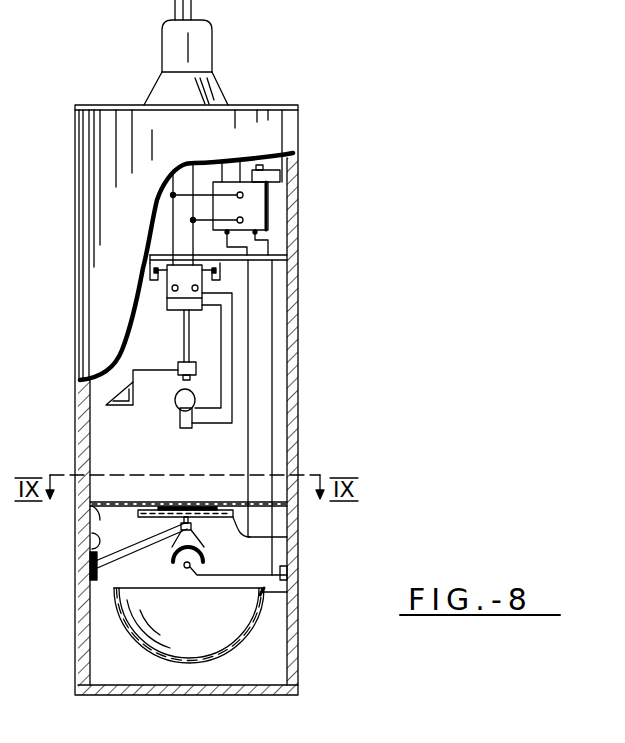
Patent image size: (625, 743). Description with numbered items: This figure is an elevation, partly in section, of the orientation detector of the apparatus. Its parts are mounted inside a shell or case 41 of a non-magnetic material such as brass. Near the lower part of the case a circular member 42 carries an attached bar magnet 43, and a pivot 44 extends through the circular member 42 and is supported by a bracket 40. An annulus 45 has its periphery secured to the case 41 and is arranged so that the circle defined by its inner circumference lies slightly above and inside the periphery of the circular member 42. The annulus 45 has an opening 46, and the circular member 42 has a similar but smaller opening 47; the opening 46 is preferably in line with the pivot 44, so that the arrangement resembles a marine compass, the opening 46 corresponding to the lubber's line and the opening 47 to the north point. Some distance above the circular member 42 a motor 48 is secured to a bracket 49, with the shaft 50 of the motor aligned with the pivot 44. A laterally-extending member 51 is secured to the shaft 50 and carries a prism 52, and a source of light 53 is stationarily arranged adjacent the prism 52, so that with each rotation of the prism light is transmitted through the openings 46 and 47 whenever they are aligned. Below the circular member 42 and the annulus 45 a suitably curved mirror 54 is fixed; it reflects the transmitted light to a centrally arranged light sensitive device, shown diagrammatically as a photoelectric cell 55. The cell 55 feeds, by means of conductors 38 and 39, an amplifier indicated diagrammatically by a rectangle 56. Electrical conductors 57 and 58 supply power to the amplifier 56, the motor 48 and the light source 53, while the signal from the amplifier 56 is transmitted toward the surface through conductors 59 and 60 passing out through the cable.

The conductor 38 is at (255, 274).
The conductor 39 is at (272, 297).
The bracket 40 is at (90, 556).
The shell or case 41 is at (78, 146).
The circular member 42 is at (252, 537).
The bar magnet 43 is at (208, 510).
The pivot 44 is at (205, 552).
The annulus 45 is at (90, 508).
The opening 46 is at (136, 507).
The opening 47 is at (150, 524).
The motor 48 is at (165, 298).
The bracket 49 is at (275, 250).
The shaft 50 is at (183, 331).
The laterally-extending member 51 is at (165, 366).
The prism 52 is at (80, 379).
The source of light 53 is at (173, 393).
The curved mirror 54 is at (150, 648).
The photoelectric cell 55 is at (172, 560).
The amplifier 56 is at (260, 207).
The electrical conductor 57 is at (172, 211).
The electrical conductor 58 is at (192, 238).
The conductor 59 is at (222, 162).
The conductor 60 is at (240, 160).